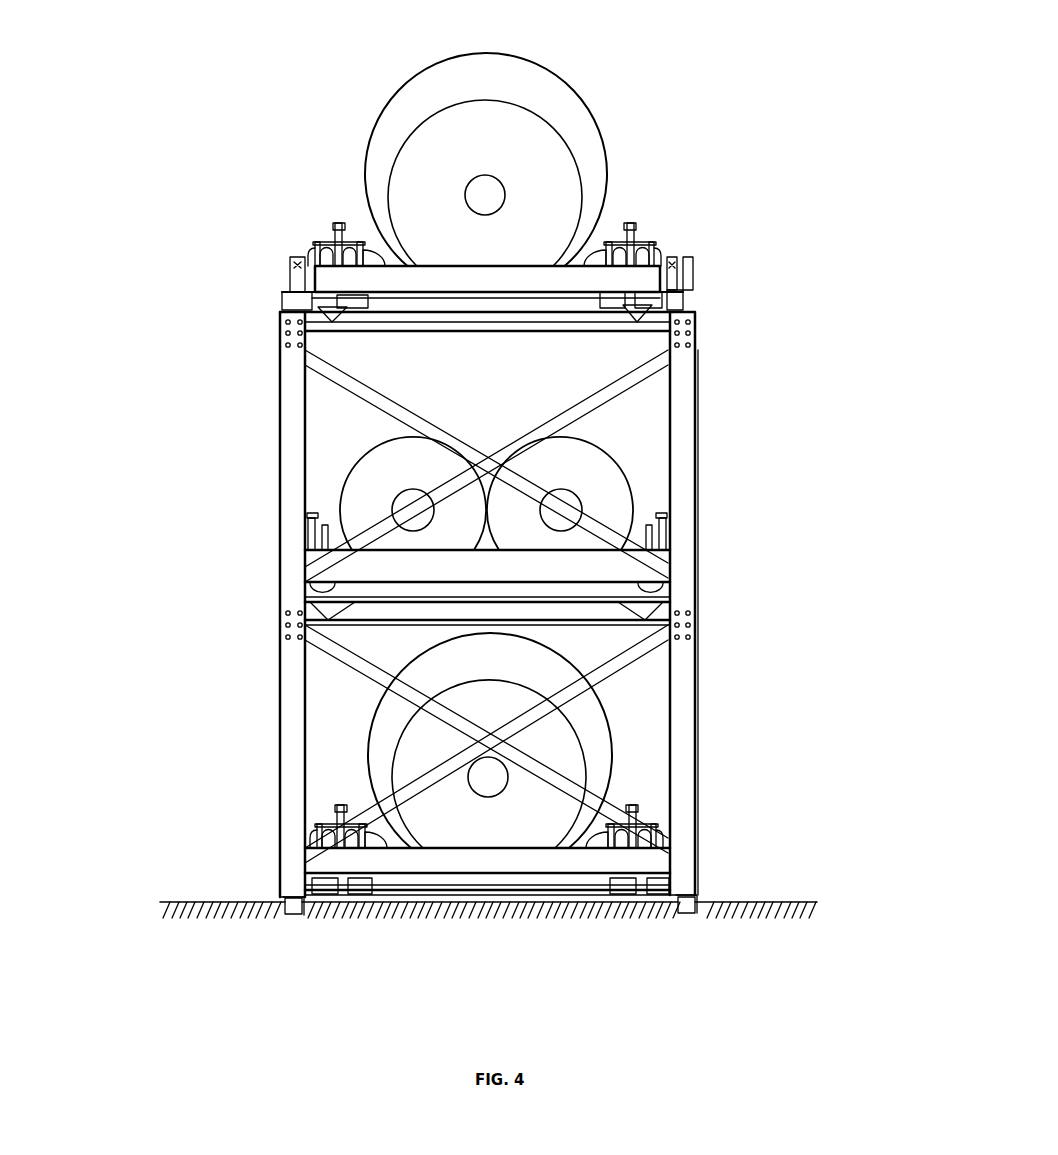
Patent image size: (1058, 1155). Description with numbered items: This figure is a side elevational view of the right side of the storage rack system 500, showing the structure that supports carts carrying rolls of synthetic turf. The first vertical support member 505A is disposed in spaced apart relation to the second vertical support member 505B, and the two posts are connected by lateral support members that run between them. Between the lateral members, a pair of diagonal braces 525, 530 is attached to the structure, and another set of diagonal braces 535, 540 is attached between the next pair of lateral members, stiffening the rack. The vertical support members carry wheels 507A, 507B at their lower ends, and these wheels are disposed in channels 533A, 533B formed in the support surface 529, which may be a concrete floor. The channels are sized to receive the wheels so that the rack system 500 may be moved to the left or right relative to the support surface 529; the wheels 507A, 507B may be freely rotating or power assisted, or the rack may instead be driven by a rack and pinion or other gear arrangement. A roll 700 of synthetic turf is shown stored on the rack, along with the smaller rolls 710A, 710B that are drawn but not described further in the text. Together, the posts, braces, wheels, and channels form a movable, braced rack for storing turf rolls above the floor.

The storage rack system 500 is at (788, 254).
The first vertical support member 505A is at (290, 760).
The second vertical support member 505B is at (672, 797).
The wheel 507A is at (283, 916).
The wheel 507B is at (697, 911).
The diagonal brace 525 is at (373, 812).
The support surface 529 is at (183, 902).
The diagonal brace 530 is at (603, 795).
The channel 533A is at (302, 915).
The channel 533B is at (677, 915).
The diagonal brace 535 is at (377, 530).
The diagonal brace 540 is at (618, 537).
The roll 700 is at (528, 158).
The small tire 710A is at (365, 485).
The small tire 710B is at (587, 473).